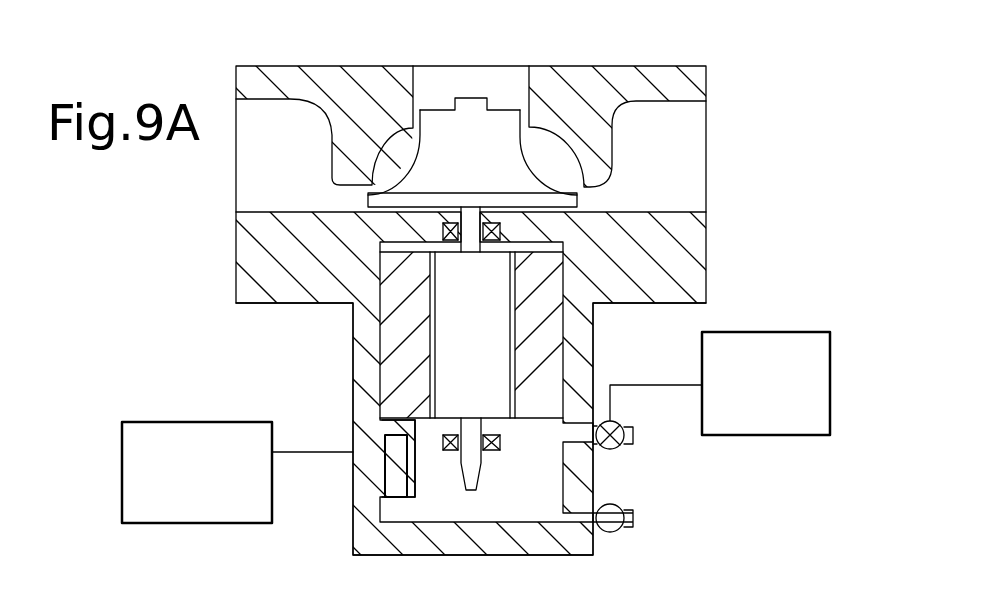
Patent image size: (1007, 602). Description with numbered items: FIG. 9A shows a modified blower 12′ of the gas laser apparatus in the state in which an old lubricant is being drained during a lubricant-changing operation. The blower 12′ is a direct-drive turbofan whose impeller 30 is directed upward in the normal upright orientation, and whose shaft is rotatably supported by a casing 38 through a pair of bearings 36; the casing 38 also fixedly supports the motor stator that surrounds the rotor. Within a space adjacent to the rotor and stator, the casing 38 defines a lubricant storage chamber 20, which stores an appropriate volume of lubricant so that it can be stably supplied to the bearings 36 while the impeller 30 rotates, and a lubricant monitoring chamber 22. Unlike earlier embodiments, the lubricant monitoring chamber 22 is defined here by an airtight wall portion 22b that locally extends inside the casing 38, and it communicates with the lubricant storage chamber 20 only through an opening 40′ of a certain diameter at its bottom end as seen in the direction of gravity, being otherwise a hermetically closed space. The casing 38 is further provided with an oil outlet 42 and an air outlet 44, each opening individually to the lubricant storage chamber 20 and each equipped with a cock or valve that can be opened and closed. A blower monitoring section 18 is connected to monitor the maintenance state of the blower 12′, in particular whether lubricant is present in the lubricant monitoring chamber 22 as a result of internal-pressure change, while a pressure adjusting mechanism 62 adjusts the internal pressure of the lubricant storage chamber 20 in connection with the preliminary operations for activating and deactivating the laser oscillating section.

The blower 12′ is at (621, 64).
The impeller 30 is at (448, 120).
The casing 38 is at (250, 240).
The lubricant storage chamber 20 is at (513, 515).
The bearings 36 is at (447, 236).
The lubricant monitoring chamber 22 is at (382, 438).
The airtight wall portion 22b is at (415, 463).
The opening 40′ is at (397, 497).
The blower monitoring section 18 is at (188, 422).
The pressure adjusting mechanism 62 is at (772, 332).
The air outlet 44 is at (633, 441).
The oil outlet 42 is at (633, 526).